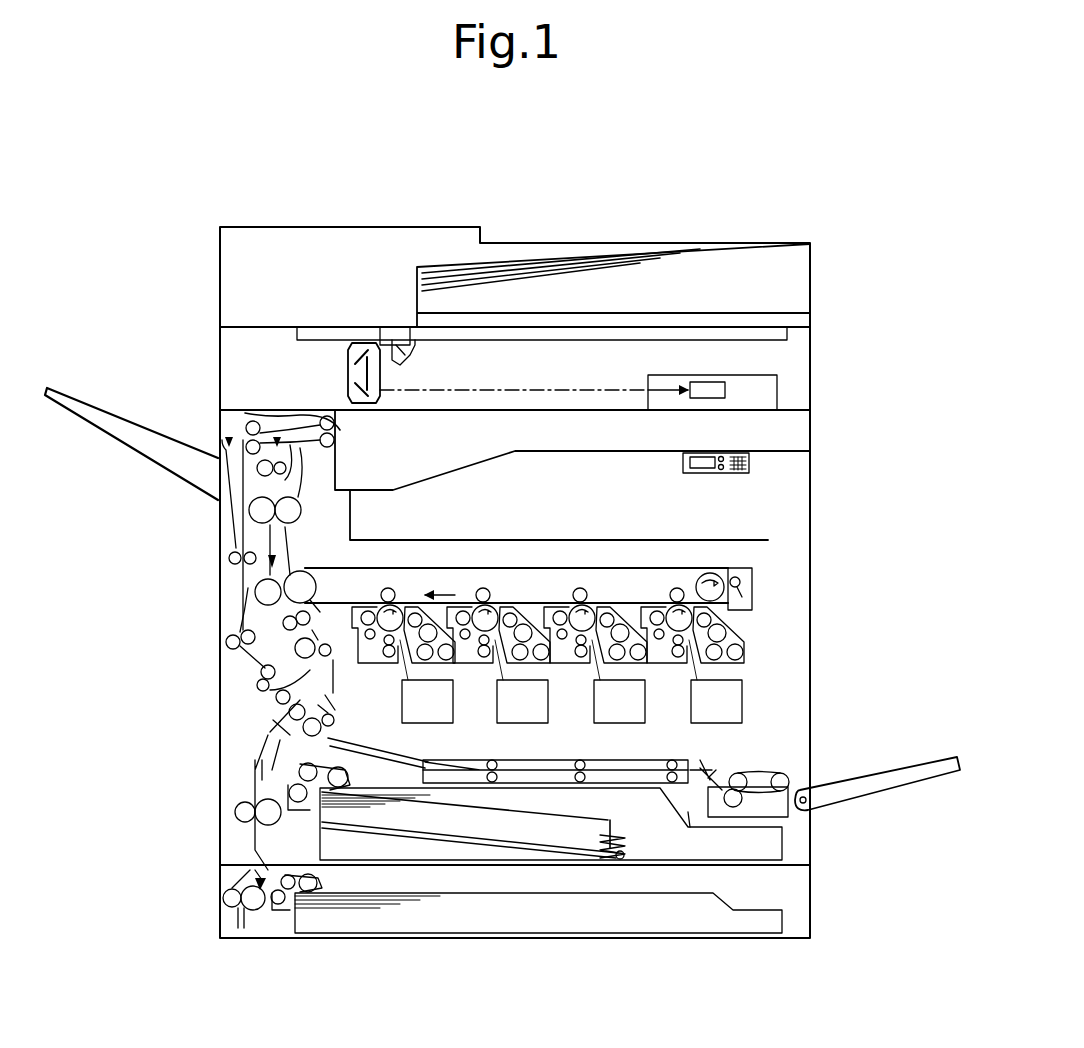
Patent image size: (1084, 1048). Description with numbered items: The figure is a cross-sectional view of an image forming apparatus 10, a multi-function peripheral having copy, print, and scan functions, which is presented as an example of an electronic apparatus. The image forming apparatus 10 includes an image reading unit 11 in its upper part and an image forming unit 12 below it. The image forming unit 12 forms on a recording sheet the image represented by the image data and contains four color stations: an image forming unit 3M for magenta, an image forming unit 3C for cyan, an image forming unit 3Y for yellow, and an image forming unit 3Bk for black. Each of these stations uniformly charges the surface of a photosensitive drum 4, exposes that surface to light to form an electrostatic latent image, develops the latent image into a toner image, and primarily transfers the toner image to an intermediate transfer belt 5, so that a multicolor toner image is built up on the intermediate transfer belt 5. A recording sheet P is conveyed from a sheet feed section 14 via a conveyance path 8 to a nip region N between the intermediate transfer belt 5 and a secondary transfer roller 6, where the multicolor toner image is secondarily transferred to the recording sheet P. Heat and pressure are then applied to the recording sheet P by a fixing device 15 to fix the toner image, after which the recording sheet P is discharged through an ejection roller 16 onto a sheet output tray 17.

The image forming apparatus 10 is at (524, 171).
The image reading unit 11 is at (818, 296).
The image forming unit 12 is at (604, 588).
The sheet feed section 14 is at (778, 952).
The fixing device 15 is at (262, 508).
The ejection roller 16 is at (322, 420).
The sheet output tray 17 is at (426, 482).
The image forming unit for magenta 3M is at (390, 582).
The image forming unit for cyan 3C is at (484, 582).
The image forming unit for yellow 3Y is at (580, 584).
The image forming unit for black 3Bk is at (678, 584).
The photosensitive drum 4 is at (478, 602).
The intermediate transfer belt 5 is at (690, 567).
The secondary transfer roller 6 is at (253, 595).
The conveyance path 8 is at (272, 726).
The nip region N is at (240, 553).
The recording sheet P is at (598, 806).